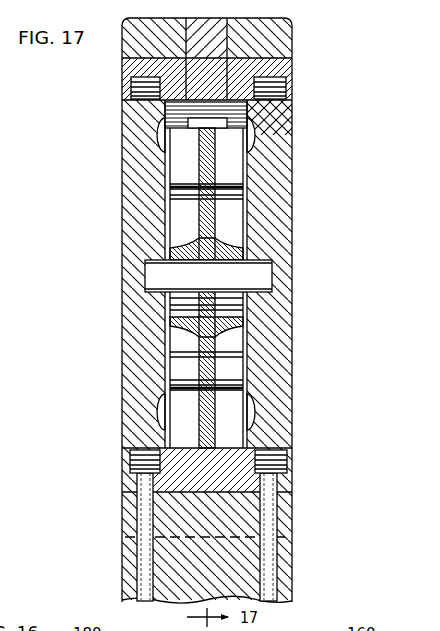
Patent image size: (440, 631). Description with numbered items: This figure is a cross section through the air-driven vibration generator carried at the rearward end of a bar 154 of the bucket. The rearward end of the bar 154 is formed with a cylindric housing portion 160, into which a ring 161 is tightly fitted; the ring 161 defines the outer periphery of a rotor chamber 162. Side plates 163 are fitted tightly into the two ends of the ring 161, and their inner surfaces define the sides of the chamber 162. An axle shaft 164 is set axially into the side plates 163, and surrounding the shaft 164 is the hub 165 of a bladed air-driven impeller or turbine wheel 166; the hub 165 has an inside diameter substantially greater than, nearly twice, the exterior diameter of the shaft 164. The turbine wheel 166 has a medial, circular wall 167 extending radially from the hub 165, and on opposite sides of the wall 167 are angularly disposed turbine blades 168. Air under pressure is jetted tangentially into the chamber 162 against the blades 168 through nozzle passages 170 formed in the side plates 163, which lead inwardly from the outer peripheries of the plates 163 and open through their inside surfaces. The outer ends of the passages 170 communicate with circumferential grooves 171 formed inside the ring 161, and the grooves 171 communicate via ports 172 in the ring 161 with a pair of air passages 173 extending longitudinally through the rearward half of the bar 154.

The bar 154 is at (294, 585).
The cylindric housing portion 160 is at (293, 44).
The ring 161 is at (295, 70).
The rotor chamber 162 is at (243, 117).
The side plates 163 is at (145, 198).
The axle shaft 164 is at (268, 277).
The hub 165 is at (244, 253).
The bladed air-driven impeller or turbine wheel 166 is at (233, 181).
The medial circular wall 167 is at (199, 168).
The turbine blades 168 is at (199, 219).
The nozzle passages 170 is at (161, 133).
The circumferential grooves 171 is at (126, 85).
The ports 172 is at (142, 480).
The air passages 173 is at (145, 562).